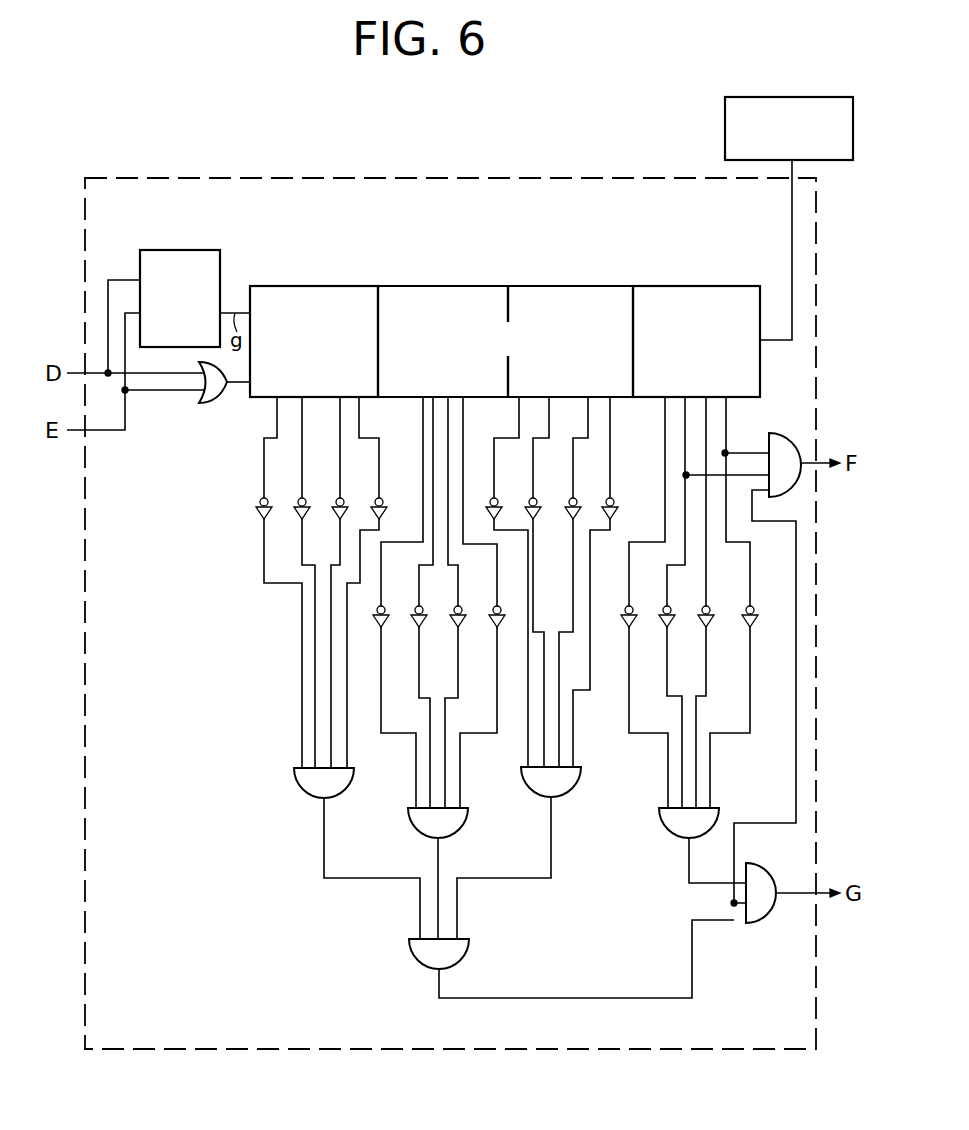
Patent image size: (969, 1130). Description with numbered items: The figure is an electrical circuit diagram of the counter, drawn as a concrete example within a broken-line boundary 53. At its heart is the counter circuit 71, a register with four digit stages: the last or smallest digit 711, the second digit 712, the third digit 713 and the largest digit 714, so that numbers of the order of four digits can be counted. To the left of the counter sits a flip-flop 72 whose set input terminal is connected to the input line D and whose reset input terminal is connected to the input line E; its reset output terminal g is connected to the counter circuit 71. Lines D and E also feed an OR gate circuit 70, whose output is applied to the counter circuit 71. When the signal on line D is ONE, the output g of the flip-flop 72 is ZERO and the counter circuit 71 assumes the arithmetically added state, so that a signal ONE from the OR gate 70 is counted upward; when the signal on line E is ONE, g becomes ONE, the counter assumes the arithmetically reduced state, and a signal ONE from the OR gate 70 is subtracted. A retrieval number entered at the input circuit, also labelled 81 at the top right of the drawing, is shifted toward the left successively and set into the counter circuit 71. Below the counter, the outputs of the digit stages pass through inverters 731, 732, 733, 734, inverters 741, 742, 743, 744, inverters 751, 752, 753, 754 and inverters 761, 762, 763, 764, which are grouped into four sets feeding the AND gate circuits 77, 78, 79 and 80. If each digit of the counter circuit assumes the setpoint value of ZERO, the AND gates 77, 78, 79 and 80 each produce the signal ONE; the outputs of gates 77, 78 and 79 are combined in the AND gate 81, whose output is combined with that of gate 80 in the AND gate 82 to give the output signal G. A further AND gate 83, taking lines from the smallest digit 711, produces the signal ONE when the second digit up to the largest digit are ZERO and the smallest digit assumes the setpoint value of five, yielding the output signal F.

The control circuit 53 is at (808, 240).
The OR gate circuit 70 is at (211, 406).
The counter circuit 71 is at (505, 260).
The last or smallest digit 711 is at (678, 286).
The second digit 712 is at (570, 310).
The third digit 713 is at (432, 286).
The largest digit 714 is at (318, 286).
The flip-flop 72 is at (181, 250).
The inverter 731 is at (268, 498).
The inverter 732 is at (306, 498).
The inverter 733 is at (344, 498).
The inverter 734 is at (383, 498).
The inverter 741 is at (379, 624).
The inverter 742 is at (417, 624).
The inverter 743 is at (456, 624).
The inverter 744 is at (482, 602).
The inverter 751 is at (498, 498).
The inverter 752 is at (537, 498).
The inverter 753 is at (577, 498).
The inverter 754 is at (614, 498).
The inverter 761 is at (627, 624).
The inverter 762 is at (665, 624).
The inverter 763 is at (704, 624).
The inverter 764 is at (746, 624).
The AND gate circuit 77 is at (306, 792).
The AND gate circuit 78 is at (409, 822).
The AND gate circuit 79 is at (580, 794).
The AND gate circuit 80 is at (662, 828).
The AND gate circuit 81 is at (725, 130).
The AND gate circuit 82 is at (765, 925).
The AND gate circuit 83 is at (787, 433).